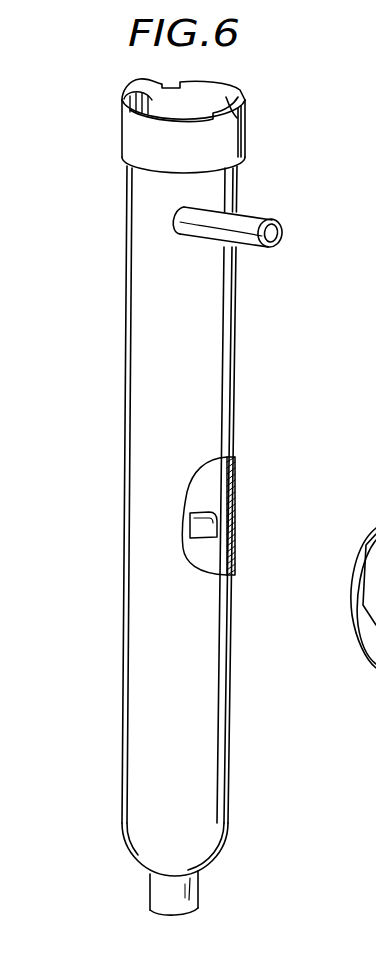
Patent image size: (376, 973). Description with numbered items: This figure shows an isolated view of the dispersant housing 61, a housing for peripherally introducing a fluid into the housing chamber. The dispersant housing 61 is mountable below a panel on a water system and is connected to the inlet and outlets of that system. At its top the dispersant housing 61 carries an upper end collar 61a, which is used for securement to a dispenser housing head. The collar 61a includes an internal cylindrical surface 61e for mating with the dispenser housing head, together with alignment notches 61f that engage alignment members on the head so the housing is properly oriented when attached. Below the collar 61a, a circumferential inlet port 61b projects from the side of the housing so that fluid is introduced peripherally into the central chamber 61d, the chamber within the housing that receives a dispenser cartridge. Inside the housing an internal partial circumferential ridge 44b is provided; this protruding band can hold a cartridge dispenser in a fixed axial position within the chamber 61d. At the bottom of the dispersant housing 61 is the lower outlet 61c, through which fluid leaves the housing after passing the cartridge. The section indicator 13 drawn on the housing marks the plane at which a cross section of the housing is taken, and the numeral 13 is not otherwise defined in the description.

The dispersant housing 61 is at (235, 397).
The upper end collar 61a is at (232, 140).
The circumferential inlet port 61b is at (252, 247).
The lower outlet 61c is at (195, 887).
The central chamber 61d is at (222, 520).
The internal cylindrical surface 61e is at (232, 122).
The alignment notches 61f is at (140, 80).
The partial circumferential ridge 44b is at (218, 553).
The section line 13 is at (112, 203).